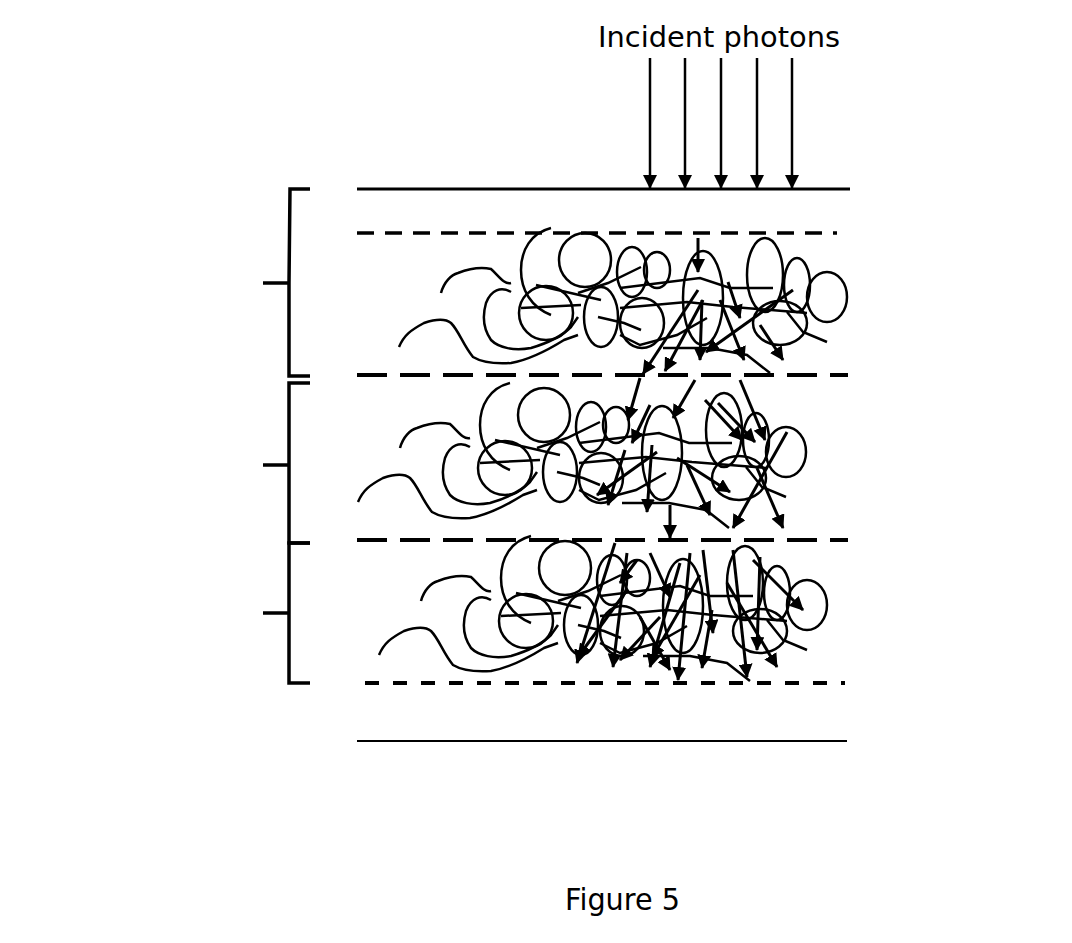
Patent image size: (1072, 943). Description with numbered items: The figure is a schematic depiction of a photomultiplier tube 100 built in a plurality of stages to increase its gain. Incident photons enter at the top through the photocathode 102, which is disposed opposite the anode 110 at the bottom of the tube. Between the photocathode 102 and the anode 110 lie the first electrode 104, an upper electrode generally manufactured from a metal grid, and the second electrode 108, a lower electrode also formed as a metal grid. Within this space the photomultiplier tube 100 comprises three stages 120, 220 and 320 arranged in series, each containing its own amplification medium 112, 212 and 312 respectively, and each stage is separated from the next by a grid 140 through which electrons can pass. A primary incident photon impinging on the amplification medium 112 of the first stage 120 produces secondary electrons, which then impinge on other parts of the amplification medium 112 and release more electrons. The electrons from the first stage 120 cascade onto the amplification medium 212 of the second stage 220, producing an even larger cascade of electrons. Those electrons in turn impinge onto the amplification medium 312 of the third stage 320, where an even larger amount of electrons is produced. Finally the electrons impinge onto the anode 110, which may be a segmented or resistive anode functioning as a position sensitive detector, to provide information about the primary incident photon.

The photomultiplier tube 100 is at (917, 197).
The photocathode 102 is at (407, 188).
The first electrode 104 is at (420, 231).
The second electrode 108 is at (570, 688).
The anode 110 is at (745, 742).
The amplification medium 112 is at (820, 302).
The first stage 120 is at (246, 282).
The intermediate layer boundary 140 is at (843, 373).
The amplification medium 212 is at (790, 432).
The second stage 220 is at (246, 463).
The amplification medium 312 is at (790, 593).
The third stage 320 is at (246, 613).